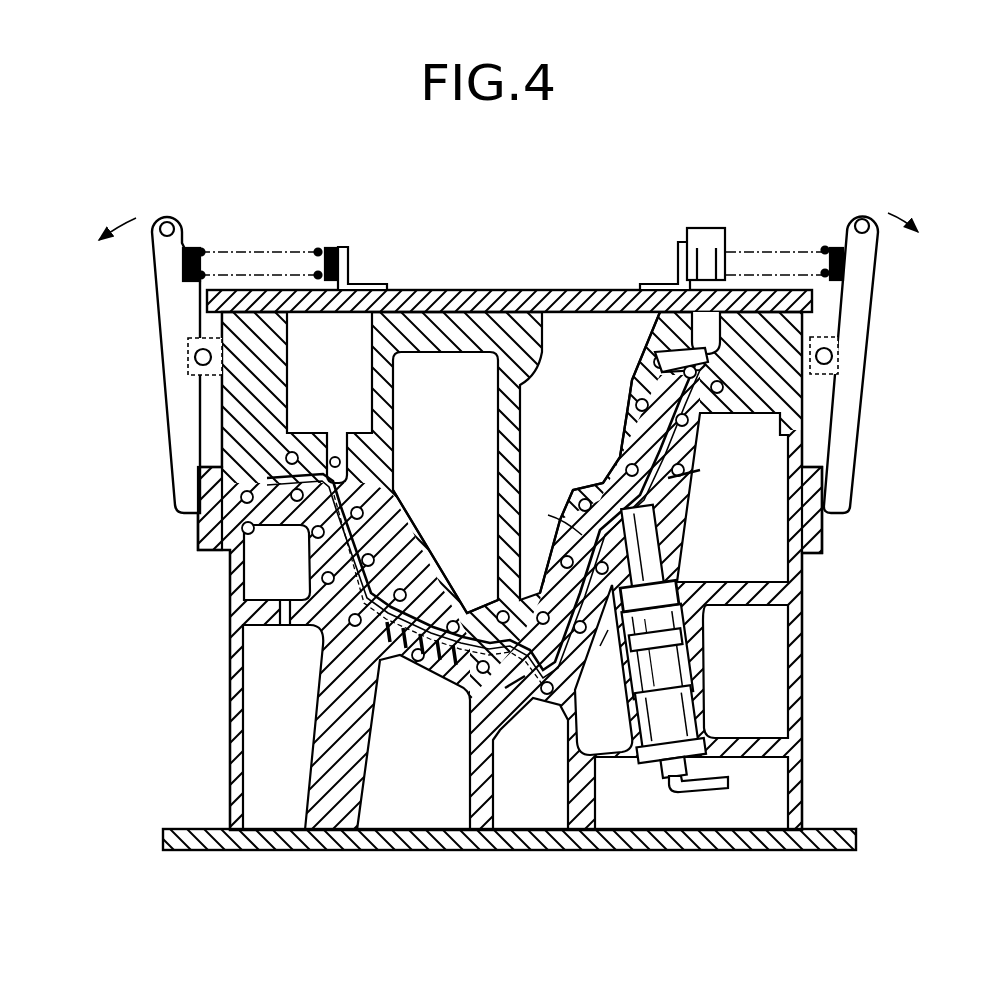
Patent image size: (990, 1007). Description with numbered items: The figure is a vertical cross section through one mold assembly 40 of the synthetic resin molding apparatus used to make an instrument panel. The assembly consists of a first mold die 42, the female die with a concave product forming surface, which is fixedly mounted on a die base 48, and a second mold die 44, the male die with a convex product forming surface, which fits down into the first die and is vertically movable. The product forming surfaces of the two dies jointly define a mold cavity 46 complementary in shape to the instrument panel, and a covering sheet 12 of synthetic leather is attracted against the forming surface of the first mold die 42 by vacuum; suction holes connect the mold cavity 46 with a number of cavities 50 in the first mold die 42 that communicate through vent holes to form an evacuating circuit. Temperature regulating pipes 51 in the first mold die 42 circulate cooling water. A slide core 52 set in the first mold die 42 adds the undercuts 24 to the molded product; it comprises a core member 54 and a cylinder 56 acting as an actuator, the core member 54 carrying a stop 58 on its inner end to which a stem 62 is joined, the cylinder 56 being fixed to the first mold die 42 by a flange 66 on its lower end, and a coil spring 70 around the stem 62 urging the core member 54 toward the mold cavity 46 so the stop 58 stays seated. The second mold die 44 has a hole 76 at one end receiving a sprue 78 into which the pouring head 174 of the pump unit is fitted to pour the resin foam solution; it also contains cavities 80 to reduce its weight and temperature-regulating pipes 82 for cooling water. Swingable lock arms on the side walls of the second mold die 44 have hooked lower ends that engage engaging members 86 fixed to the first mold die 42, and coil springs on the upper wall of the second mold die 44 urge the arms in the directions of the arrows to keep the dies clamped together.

The covering sheet 12 is at (554, 514).
The undercuts 24 is at (584, 482).
The mold assembly 40 is at (521, 176).
The first mold die 42 is at (806, 690).
The second mold die 44 is at (497, 283).
The mold cavity 46 is at (586, 490).
The die base 48 is at (385, 852).
The cavities 50 is at (283, 582).
The temperature regulating pipes 51 is at (690, 474).
The slide core 52 is at (674, 575).
The core member 54 is at (656, 560).
The cylinder 56 is at (693, 700).
The stop 58 is at (682, 592).
The stem 62 is at (683, 636).
The flange 66 is at (707, 746).
The coil spring 70 is at (600, 650).
The hole 76 is at (662, 326).
The sprue 78 is at (658, 352).
The cavities 80 is at (326, 380).
The temperature-regulating pipes 82 is at (335, 458).
The engaging members 86 is at (822, 541).
The pouring head 174 is at (706, 238).